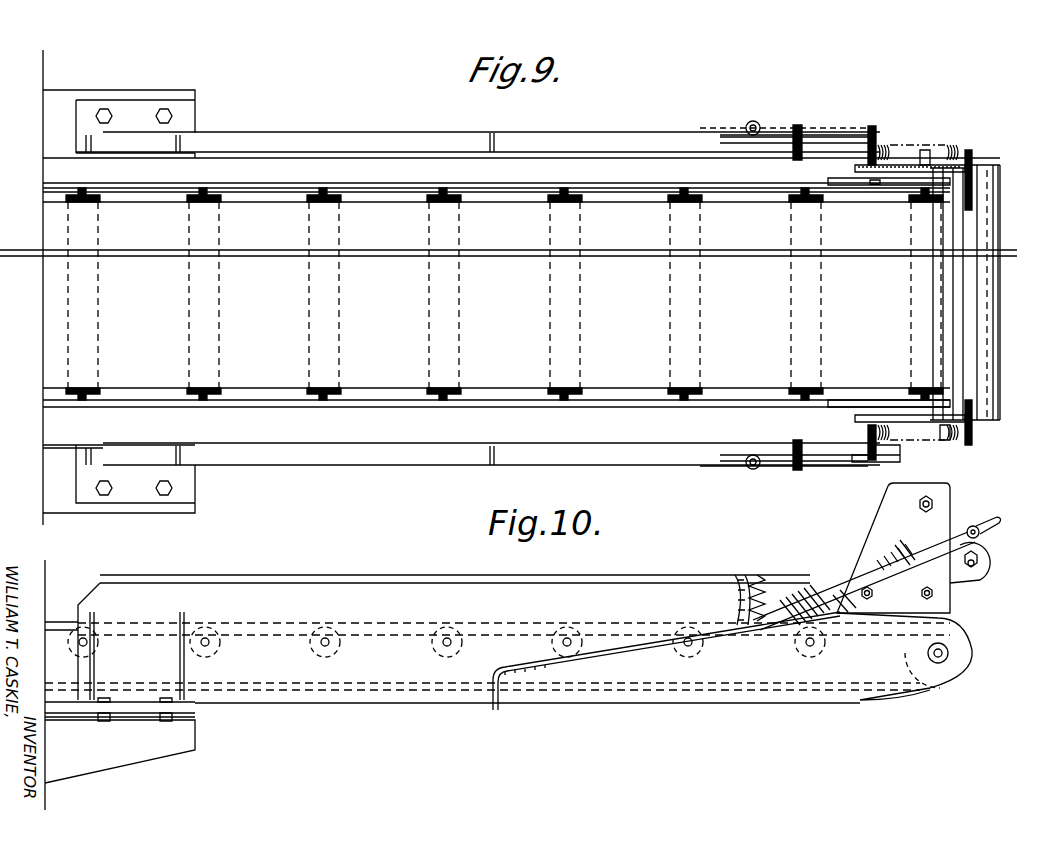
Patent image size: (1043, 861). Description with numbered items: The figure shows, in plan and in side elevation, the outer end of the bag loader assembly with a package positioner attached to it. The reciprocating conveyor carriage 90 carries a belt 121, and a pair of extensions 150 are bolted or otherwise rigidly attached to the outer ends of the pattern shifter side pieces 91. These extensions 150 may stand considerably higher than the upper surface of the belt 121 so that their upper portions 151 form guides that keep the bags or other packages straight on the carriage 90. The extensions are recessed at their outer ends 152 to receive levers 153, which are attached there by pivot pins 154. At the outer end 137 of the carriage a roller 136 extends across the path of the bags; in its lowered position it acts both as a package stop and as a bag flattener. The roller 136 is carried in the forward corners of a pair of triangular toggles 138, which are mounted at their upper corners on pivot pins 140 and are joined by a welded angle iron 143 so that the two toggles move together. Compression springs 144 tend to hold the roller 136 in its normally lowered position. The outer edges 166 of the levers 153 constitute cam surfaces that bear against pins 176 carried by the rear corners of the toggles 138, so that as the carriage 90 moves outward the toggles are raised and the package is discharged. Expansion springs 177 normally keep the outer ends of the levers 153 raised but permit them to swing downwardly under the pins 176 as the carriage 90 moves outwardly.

In FIG. 9, the carriage 90 is at (296, 161).
In FIG. 9, the pattern shifter side pieces 91 is at (175, 82).
In FIG. 10, the pattern shifter side pieces 91 is at (134, 752).
In FIG. 9, the belt 121 is at (504, 294).
In FIG. 10, the belt 121 is at (512, 615).
In FIG. 9, the roller 136 is at (982, 172).
In FIG. 10, the roller 136 is at (984, 567).
In FIG. 10, the outer end of the reciprocating carriage 137 is at (732, 661).
In FIG. 9, the toggles 138 is at (888, 162).
In FIG. 10, the toggles 138 is at (910, 525).
In FIG. 10, the pivot pins 140 is at (935, 505).
In FIG. 9, the angle iron 143 is at (1001, 342).
In FIG. 9, the compression springs 144 is at (938, 150).
In FIG. 9, the extensions 150 is at (440, 135).
In FIG. 10, the extensions 150 is at (527, 678).
In FIG. 10, the upper portions of the extensions 151 is at (427, 637).
In FIG. 9, the outer ends of the extensions 152 is at (780, 130).
In FIG. 10, the levers 153 is at (797, 595).
In FIG. 9, the pivot pins 154 is at (812, 135).
In FIG. 10, the outer edges of the levers 166 is at (864, 579).
In FIG. 9, the pins 176 is at (890, 455).
In FIG. 10, the expansion springs 177 is at (752, 575).